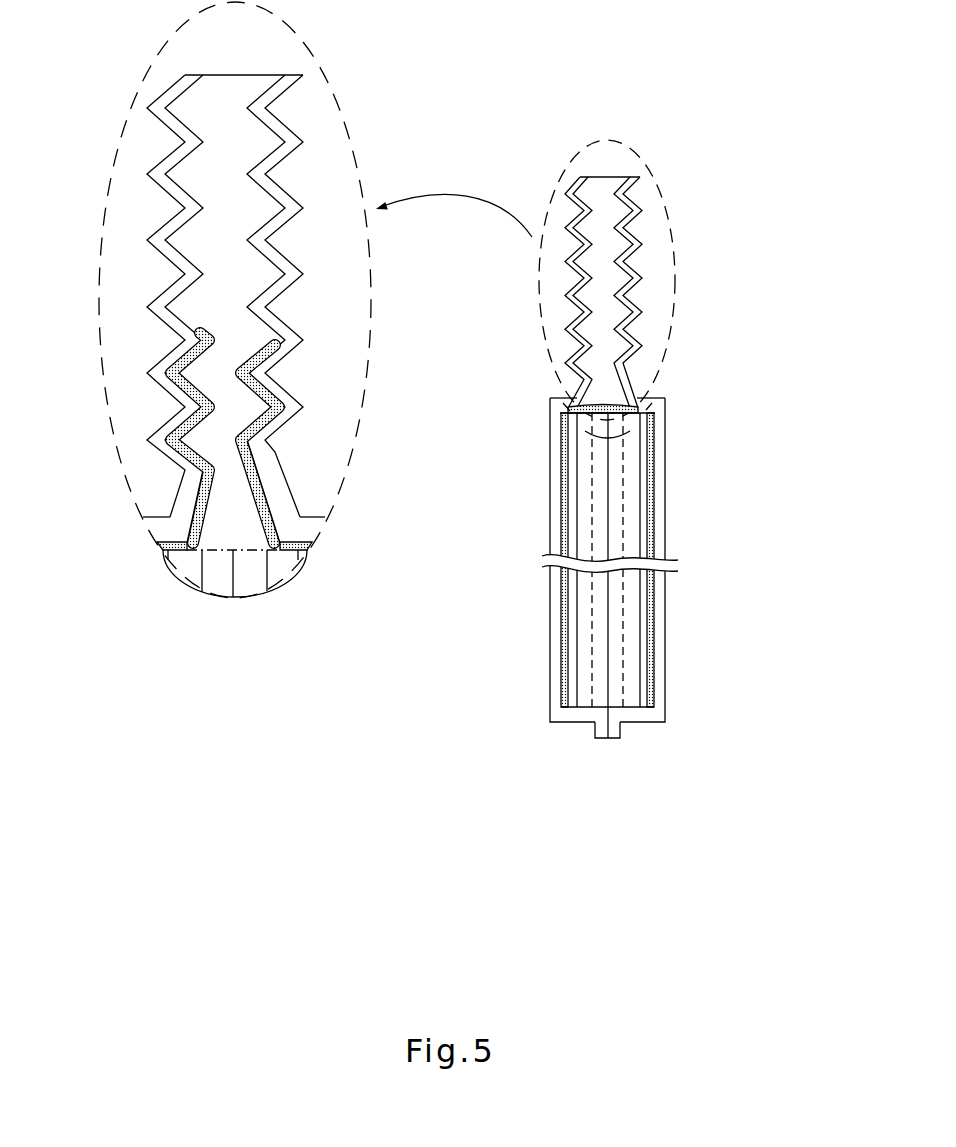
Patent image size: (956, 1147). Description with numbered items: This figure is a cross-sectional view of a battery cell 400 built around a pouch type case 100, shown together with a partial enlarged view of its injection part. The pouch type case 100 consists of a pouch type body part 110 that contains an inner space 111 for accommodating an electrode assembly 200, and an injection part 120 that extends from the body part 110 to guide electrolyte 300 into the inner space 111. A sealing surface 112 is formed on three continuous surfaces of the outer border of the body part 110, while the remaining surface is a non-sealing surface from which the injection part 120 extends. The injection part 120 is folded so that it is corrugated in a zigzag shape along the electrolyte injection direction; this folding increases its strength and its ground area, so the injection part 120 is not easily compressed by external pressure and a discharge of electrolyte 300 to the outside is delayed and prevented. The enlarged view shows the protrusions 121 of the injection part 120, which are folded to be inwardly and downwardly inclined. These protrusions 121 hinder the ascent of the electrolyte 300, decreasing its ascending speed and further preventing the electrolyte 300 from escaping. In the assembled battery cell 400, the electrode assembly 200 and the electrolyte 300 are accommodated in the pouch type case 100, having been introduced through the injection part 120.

The pouch type case 100 is at (777, 323).
The pouch type body part 110 is at (658, 456).
The inner space 111 is at (652, 675).
The sealing surface 112 is at (622, 732).
The injection part 120 is at (297, 195).
The protrusions 121 is at (186, 327).
The electrode assembly 200 is at (623, 614).
The electrolyte 300 is at (279, 350).
The battery cell 400 is at (840, 222).